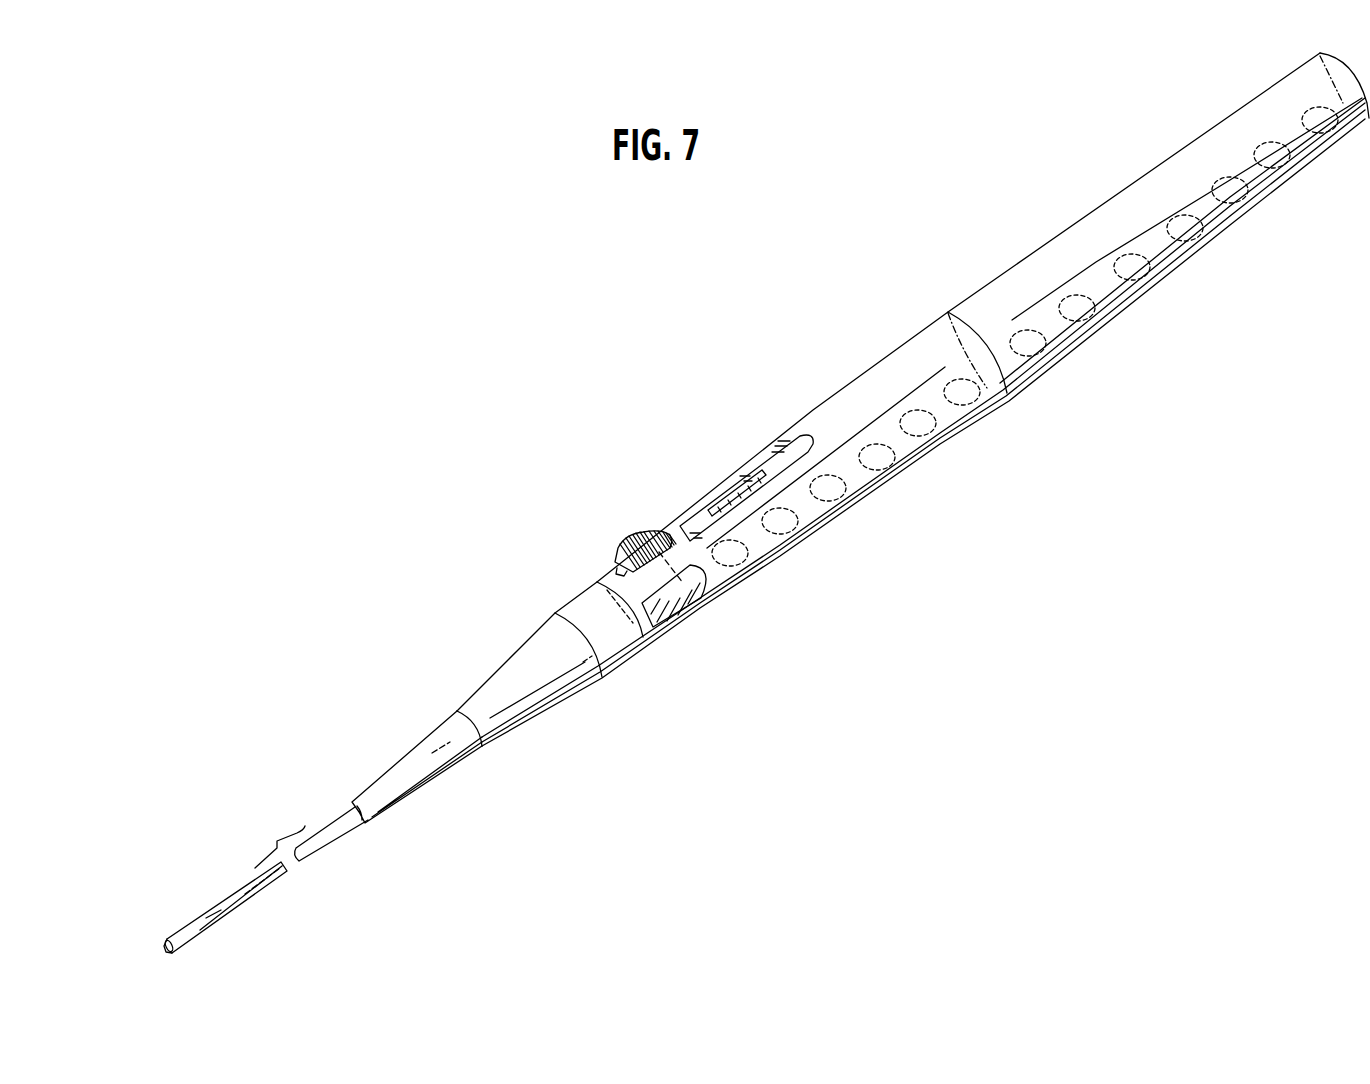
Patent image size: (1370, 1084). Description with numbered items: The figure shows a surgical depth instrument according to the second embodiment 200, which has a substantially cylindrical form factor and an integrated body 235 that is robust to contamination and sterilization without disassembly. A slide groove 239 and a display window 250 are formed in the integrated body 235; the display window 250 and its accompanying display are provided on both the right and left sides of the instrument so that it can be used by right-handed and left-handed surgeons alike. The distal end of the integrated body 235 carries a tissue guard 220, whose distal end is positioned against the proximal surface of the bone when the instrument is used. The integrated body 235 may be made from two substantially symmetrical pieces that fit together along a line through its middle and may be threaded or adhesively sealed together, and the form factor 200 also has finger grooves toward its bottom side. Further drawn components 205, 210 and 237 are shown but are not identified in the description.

The second embodiment 200 is at (924, 214).
The distal tip 205 is at (162, 949).
The needle 210 is at (237, 887).
The tissue guard 220 is at (418, 745).
The integrated body 235 is at (1106, 213).
The slider knob 237 is at (642, 528).
The slide groove 239 is at (743, 470).
The display window 250 is at (670, 623).